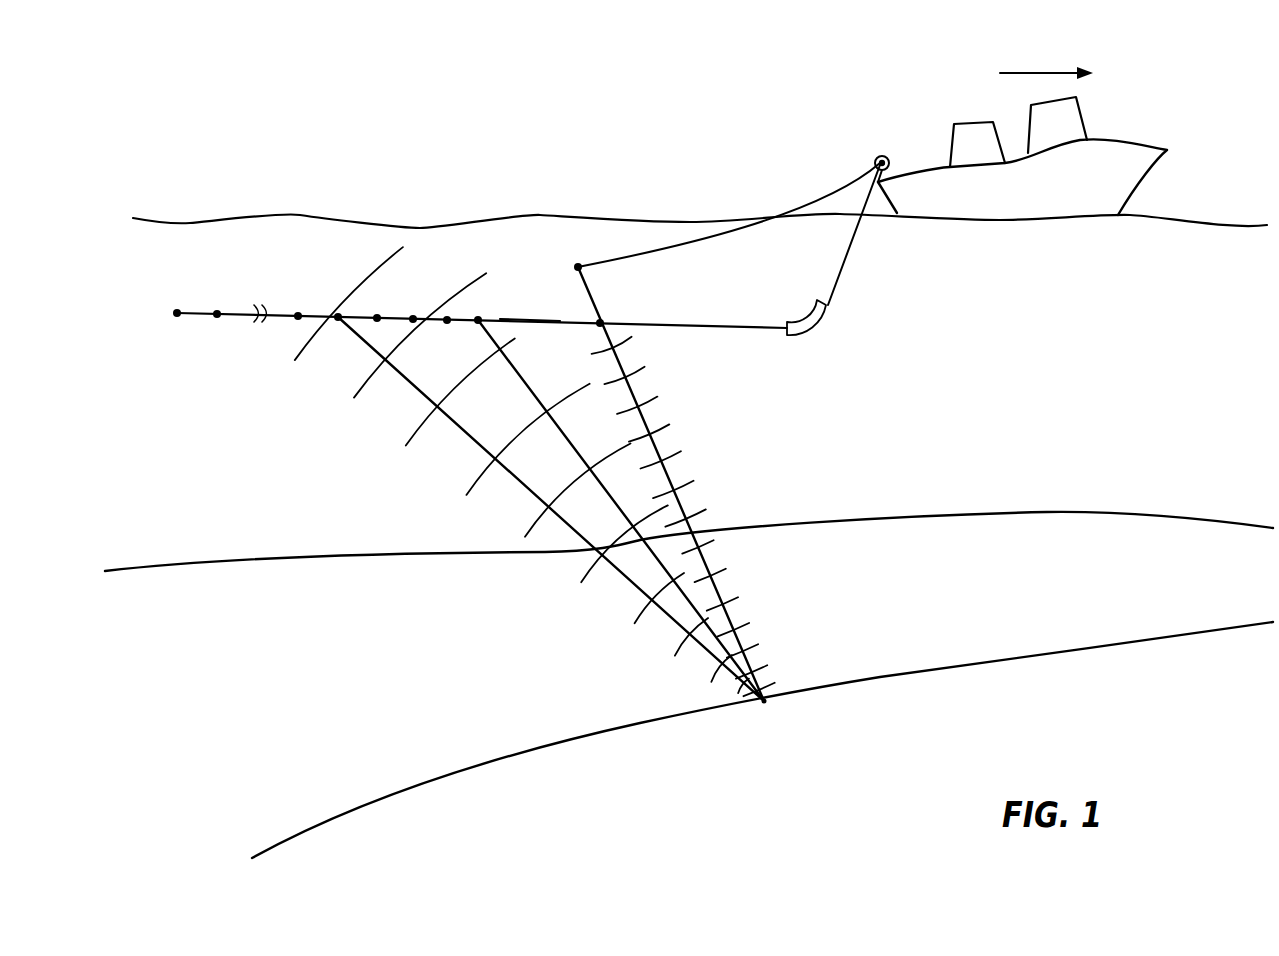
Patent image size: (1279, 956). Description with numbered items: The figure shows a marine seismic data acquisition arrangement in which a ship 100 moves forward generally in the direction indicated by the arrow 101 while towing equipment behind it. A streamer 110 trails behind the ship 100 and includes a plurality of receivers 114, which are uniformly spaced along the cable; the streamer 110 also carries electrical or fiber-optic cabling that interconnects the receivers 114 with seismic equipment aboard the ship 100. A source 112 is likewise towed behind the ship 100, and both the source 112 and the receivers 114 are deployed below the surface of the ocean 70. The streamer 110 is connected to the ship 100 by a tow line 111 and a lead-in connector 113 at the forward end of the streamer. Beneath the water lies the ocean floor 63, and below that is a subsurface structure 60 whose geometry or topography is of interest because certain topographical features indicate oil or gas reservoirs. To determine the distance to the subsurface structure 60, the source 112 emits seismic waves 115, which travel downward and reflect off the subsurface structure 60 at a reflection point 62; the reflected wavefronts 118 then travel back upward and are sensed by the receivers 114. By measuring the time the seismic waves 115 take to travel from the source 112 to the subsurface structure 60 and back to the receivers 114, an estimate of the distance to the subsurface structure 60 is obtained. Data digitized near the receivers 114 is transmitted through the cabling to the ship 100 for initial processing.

The subsurface structure 60 is at (1148, 635).
The reflection point 62 is at (764, 705).
The ocean floor 63 is at (1050, 515).
The surface of the ocean 70 is at (1203, 227).
The ship 100 is at (1140, 143).
The arrow 101 is at (1037, 72).
The streamer 110 is at (518, 292).
The tow cable 111 is at (843, 240).
The source 112 is at (587, 270).
The lead-in connector 113 is at (813, 330).
The receivers 114 is at (308, 294).
The seismic waves 115 is at (687, 490).
The reflected wavefronts 118 is at (460, 428).